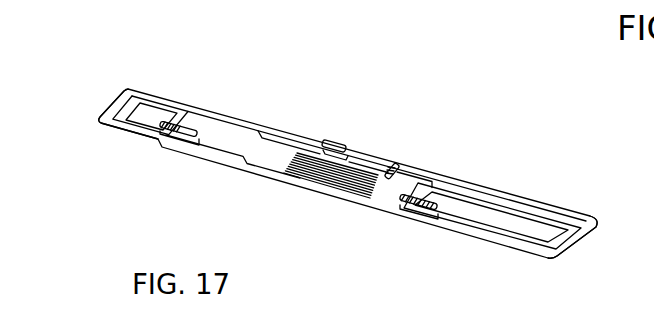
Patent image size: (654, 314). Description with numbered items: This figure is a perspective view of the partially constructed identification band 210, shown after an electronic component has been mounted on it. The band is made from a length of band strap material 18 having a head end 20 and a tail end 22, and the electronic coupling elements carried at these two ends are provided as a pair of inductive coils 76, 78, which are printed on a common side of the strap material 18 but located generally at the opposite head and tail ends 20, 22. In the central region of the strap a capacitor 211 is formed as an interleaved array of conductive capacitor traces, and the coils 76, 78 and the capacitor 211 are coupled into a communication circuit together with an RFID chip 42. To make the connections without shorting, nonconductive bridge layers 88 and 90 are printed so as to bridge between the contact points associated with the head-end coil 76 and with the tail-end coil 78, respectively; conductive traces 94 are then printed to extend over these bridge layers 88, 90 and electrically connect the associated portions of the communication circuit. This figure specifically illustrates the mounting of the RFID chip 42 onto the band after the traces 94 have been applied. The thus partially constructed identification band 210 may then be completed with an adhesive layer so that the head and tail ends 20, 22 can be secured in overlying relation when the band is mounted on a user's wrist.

The identification band 210 is at (348, 131).
The head end 20 is at (98, 113).
The tail end 22 is at (594, 241).
The band strap material 18 is at (224, 175).
The head-end inductive coil 76 is at (168, 92).
The tail-end inductive coil 78 is at (492, 205).
The nonconductive bridge layer 88 is at (163, 157).
The nonconductive bridge layer 90 is at (395, 235).
The conductive traces 94 is at (306, 153).
The RFID chip 42 is at (356, 135).
The capacitor 211 is at (298, 194).